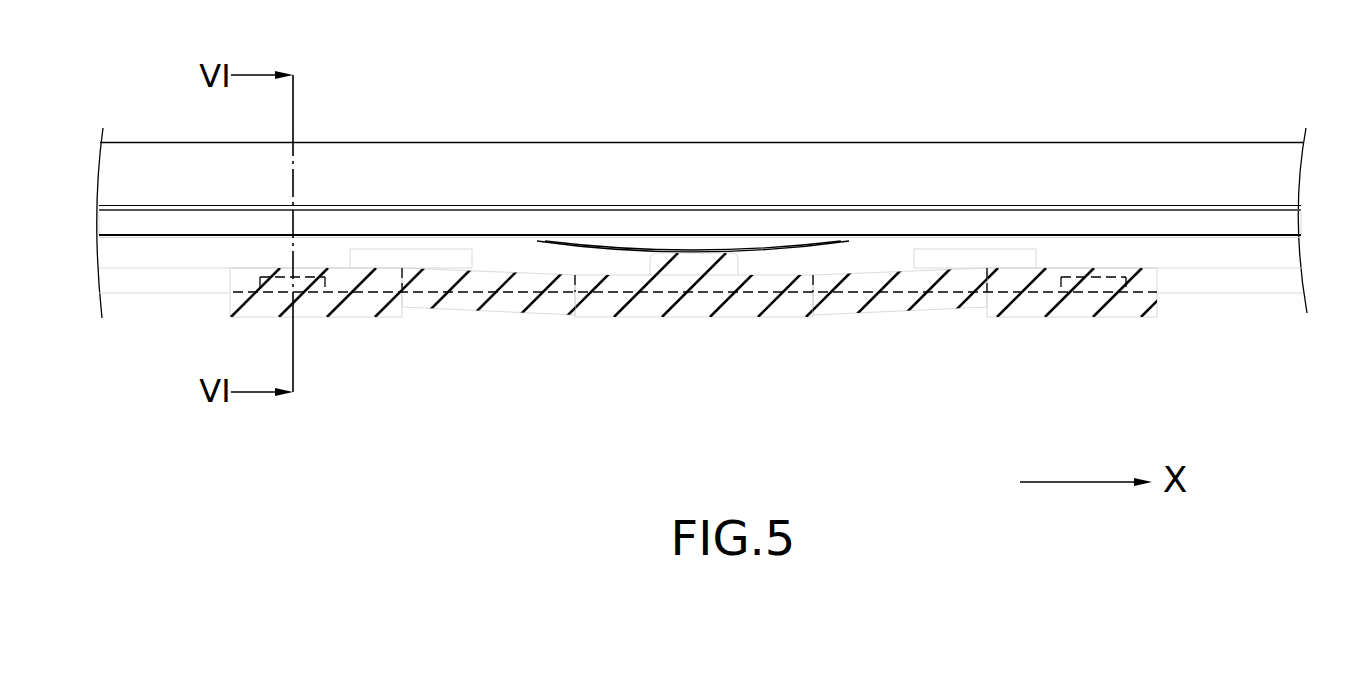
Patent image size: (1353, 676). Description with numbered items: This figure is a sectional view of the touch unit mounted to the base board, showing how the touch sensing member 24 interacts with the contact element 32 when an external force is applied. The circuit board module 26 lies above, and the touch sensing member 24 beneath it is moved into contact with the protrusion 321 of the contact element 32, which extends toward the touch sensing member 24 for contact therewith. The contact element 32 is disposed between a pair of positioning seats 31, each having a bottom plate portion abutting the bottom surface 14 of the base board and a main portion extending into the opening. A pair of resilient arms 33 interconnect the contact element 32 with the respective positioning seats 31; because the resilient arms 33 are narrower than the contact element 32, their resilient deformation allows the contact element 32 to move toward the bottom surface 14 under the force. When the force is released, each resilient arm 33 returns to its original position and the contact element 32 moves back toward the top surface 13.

The top surface 13 is at (1262, 267).
The bottom surface 14 is at (1273, 292).
The touch sensing member 24 is at (683, 248).
The circuit board module 26 is at (1152, 218).
The positioning seats 31 is at (362, 310).
The contact element 32 is at (747, 307).
The protrusion 321 is at (678, 265).
The resilient arms 33 is at (517, 303).